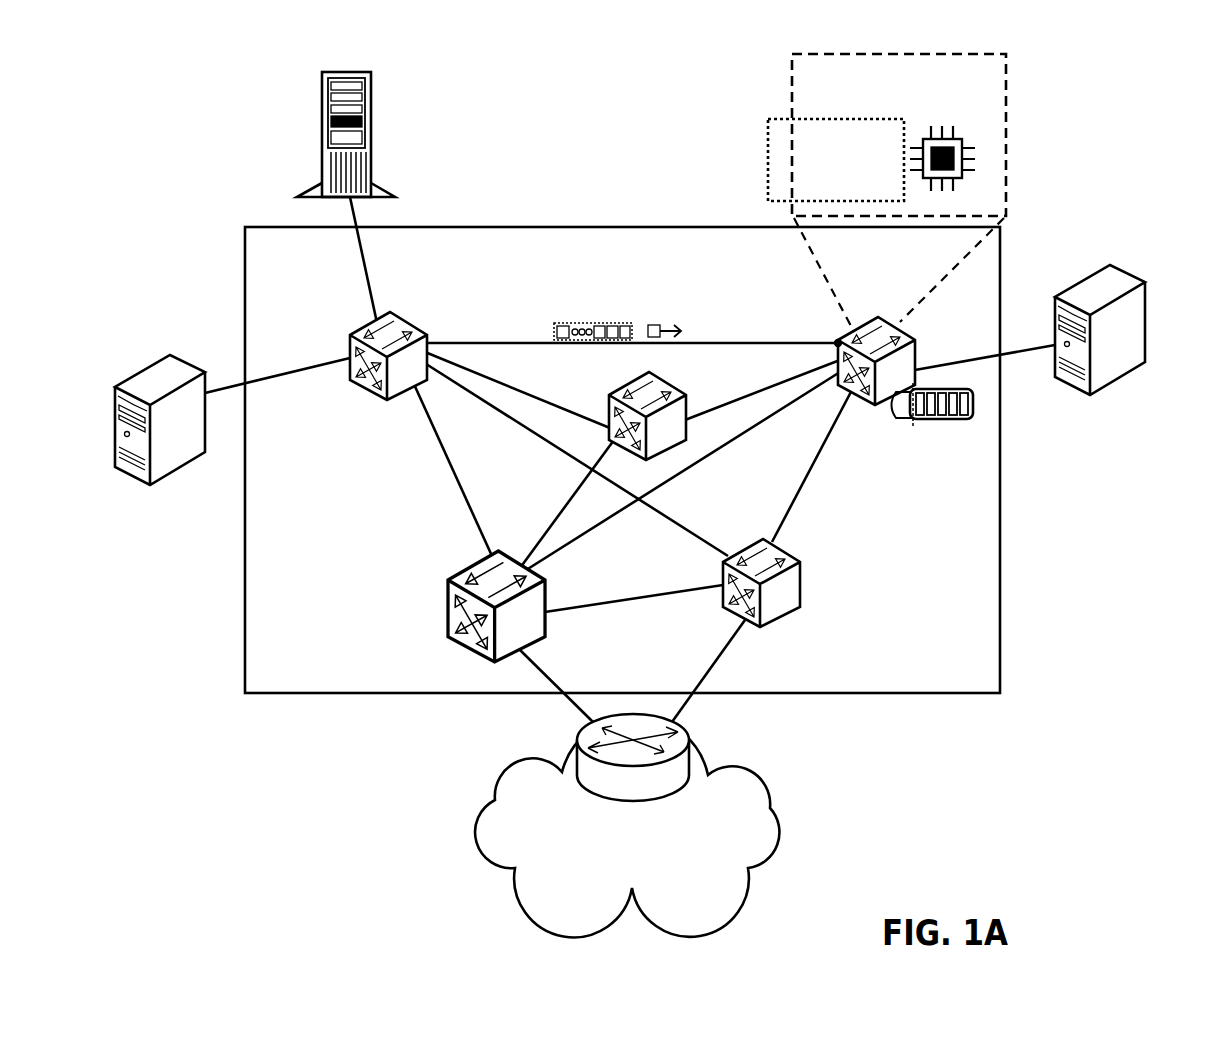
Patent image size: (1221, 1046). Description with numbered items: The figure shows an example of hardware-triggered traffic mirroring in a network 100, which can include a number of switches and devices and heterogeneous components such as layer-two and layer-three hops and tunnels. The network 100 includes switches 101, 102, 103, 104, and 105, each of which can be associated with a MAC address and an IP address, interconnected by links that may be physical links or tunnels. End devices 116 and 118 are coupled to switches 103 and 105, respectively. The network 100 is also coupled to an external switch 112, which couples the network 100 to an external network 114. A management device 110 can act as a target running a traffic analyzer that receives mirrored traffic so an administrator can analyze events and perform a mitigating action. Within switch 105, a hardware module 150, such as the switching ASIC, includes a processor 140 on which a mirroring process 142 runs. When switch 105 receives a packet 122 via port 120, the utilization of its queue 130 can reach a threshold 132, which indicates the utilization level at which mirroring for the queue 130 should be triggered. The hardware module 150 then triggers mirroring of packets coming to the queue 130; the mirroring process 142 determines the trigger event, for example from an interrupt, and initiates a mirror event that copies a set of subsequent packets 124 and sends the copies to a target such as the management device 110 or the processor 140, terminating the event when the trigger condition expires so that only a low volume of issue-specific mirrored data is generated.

The network 100 is at (620, 226).
The switch 101 is at (545, 628).
The switch 102 is at (726, 596).
The switch 103 is at (396, 317).
The switch 104 is at (668, 384).
The switch 105 is at (920, 328).
The management device 110 is at (371, 127).
The external switch 112 is at (692, 757).
The external network 114 is at (627, 827).
The end device 116 is at (177, 354).
The end device 118 is at (1143, 308).
The port 120 is at (838, 343).
The packet 122 is at (648, 326).
The subsequent packets 124 is at (590, 322).
The queue 130 is at (973, 403).
The threshold 132 is at (913, 427).
The processor 140 is at (982, 157).
The mirroring process 142 is at (836, 160).
The hardware module 150 is at (899, 135).